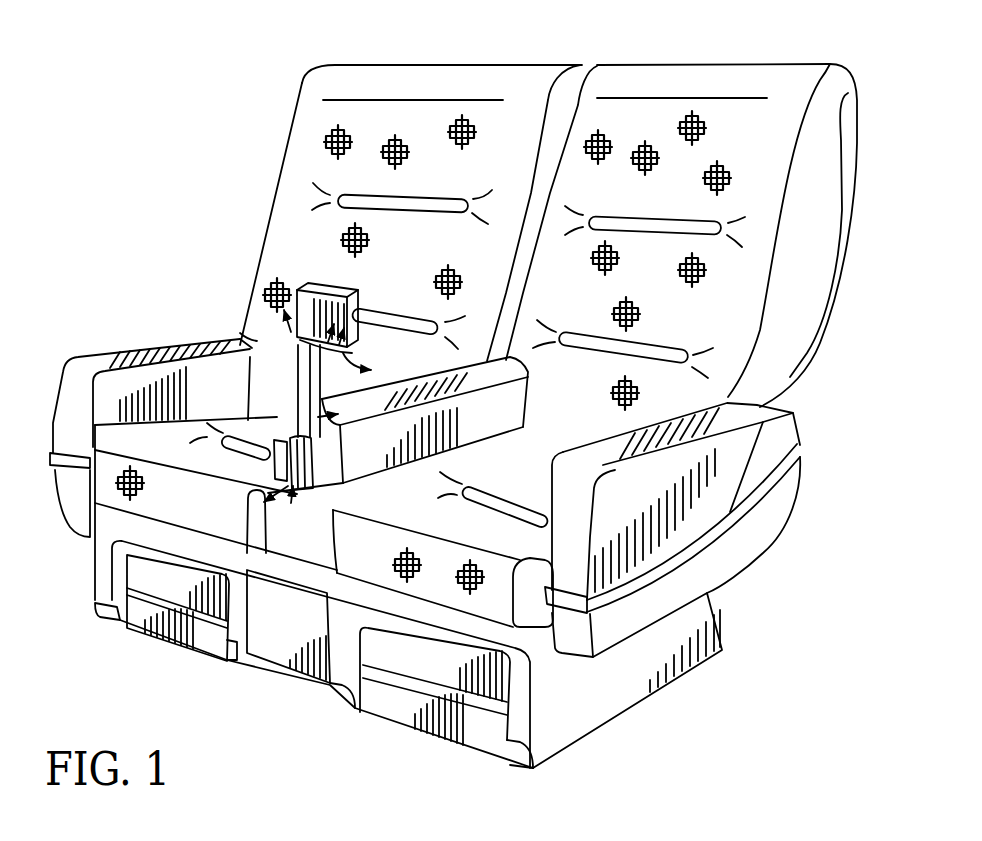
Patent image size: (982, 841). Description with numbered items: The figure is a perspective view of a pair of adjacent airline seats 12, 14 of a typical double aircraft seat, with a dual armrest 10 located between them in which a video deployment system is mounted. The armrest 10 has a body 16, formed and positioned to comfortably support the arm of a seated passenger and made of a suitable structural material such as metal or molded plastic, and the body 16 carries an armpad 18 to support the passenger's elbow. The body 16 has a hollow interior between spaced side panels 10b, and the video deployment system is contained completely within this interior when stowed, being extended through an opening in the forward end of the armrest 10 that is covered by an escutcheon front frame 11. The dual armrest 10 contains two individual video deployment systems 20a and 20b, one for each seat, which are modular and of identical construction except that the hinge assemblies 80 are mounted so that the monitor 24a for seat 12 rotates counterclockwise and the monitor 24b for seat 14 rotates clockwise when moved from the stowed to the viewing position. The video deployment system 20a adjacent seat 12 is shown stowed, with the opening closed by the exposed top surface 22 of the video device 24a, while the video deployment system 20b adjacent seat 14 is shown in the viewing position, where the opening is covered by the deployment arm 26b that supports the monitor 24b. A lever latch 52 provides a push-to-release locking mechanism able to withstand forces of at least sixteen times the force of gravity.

The dual armrest 10 is at (458, 437).
The side panels 10b is at (538, 422).
The escutcheon front frame 11 is at (320, 480).
The seat 12 is at (422, 61).
The seat 14 is at (680, 61).
The body 16 is at (358, 473).
The armpad 18 is at (527, 374).
The video deployment system 20a is at (275, 467).
The video deployment system 20b is at (366, 281).
The exposed top surface 22 is at (329, 287).
The monitor 24a is at (265, 490).
The monitor 24b is at (365, 347).
The deployment arm 26b is at (298, 380).
The lever latch 52 is at (290, 490).
The hinge assemblies 80 is at (297, 347).